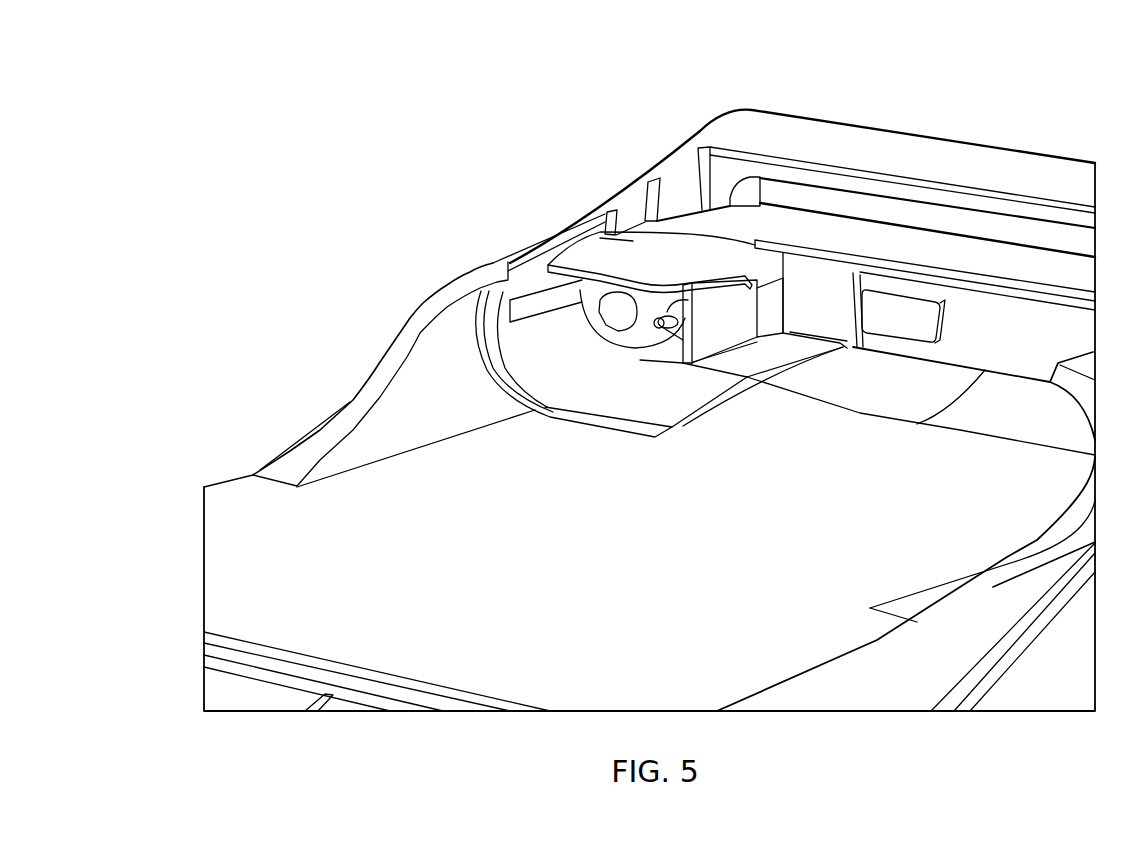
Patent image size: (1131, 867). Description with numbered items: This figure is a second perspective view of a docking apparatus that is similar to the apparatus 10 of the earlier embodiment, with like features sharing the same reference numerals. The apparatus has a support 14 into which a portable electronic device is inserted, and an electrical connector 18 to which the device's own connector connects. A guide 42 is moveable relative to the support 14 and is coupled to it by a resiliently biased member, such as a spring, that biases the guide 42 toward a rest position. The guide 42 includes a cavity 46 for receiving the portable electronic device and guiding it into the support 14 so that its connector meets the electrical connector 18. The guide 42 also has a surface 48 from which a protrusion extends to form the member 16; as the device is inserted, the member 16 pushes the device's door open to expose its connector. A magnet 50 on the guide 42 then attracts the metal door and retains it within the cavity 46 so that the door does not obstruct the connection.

The apparatus 10 is at (641, 112).
The support 14 is at (397, 340).
The member 16 is at (658, 330).
The electrical connector 18 is at (930, 318).
The guide 42 is at (625, 265).
The cavity 46 is at (808, 309).
The surface 48 is at (625, 347).
The magnet 50 is at (733, 337).